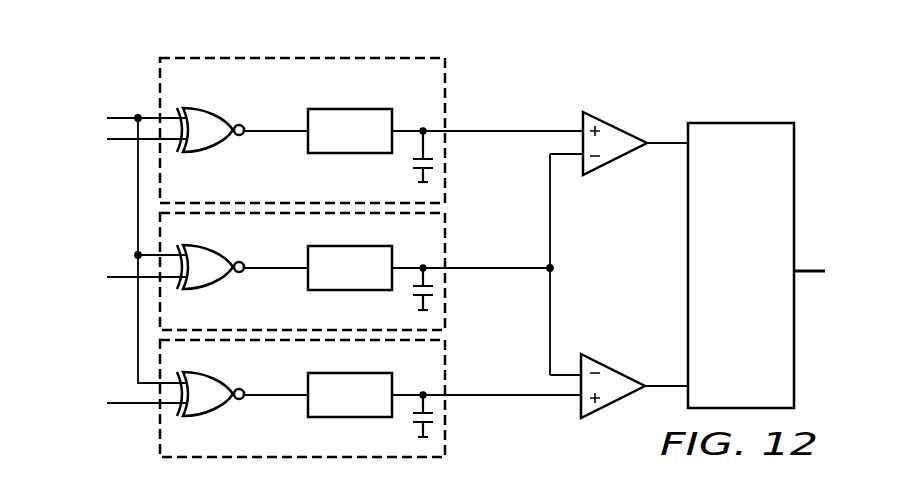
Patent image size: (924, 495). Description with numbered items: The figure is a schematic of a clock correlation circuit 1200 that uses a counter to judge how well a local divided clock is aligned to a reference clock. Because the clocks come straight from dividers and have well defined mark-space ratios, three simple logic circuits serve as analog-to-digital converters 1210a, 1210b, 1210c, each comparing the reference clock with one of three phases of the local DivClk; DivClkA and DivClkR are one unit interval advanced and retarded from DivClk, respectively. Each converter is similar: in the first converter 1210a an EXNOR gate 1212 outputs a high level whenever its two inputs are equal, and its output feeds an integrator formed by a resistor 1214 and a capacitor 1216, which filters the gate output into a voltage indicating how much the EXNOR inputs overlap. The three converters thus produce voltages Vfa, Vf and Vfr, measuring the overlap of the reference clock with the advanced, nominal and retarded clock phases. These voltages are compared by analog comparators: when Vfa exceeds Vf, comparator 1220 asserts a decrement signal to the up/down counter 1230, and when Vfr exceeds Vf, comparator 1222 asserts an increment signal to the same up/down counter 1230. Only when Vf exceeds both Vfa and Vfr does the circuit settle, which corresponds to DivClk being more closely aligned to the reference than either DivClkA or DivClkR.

The clock correlation circuit 1200 is at (108, 63).
The analog-to-digital converter 1210a is at (446, 176).
The analog-to-digital converter 1210b is at (446, 300).
The analog-to-digital converter 1210c is at (446, 427).
The EXNOR gate 1212 is at (243, 96).
The resistor 1214 is at (305, 145).
The capacitor 1216 is at (410, 163).
The comparator 1220 is at (613, 161).
The comparator 1222 is at (614, 366).
The up/down counter 1230 is at (742, 123).